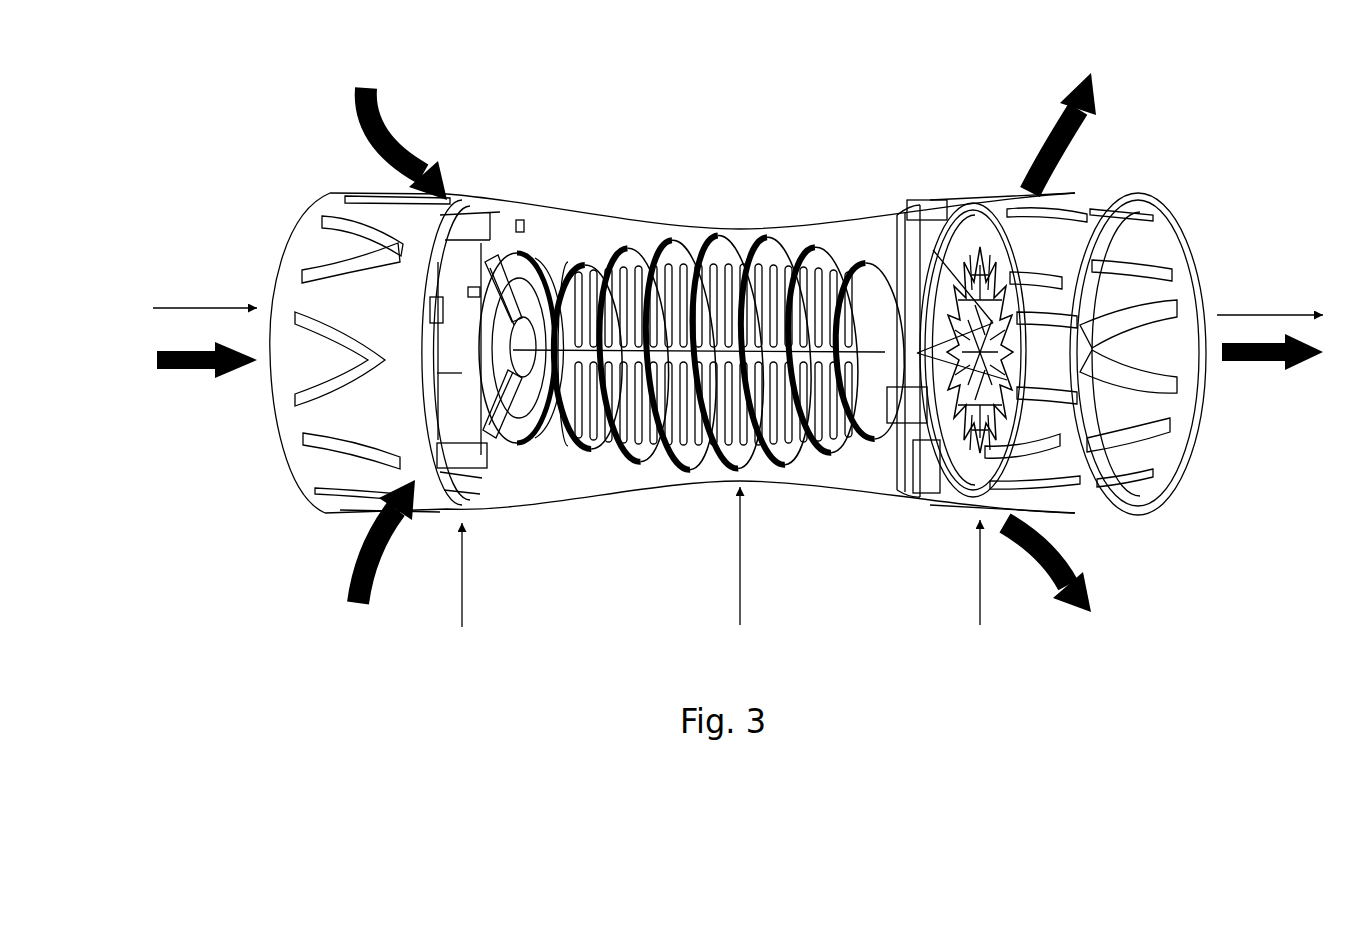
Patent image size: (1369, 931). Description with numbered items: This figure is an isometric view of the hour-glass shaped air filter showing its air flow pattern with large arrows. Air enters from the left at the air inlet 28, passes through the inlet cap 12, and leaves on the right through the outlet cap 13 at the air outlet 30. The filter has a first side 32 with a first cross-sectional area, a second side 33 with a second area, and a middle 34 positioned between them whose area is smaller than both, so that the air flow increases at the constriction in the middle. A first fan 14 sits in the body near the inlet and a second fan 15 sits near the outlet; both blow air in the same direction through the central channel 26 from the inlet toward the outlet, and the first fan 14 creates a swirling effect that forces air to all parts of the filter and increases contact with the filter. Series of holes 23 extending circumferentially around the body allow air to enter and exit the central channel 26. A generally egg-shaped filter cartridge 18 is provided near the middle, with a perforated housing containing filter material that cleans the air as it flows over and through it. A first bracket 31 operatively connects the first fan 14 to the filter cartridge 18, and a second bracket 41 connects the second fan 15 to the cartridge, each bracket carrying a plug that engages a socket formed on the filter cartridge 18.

The inlet cap 12 is at (458, 200).
The outlet cap 13 is at (966, 198).
The first fan 14 is at (505, 200).
The second fan 15 is at (926, 240).
The filter cartridge 18 is at (763, 243).
The holes 23 is at (447, 252).
The central channel 26 is at (573, 253).
The air inlet 28 is at (183, 338).
The air outlet 30 is at (1292, 337).
The first bracket 31 is at (528, 200).
The first side 32 is at (455, 594).
The second side 33 is at (983, 591).
The middle 34 is at (731, 575).
The second bracket 41 is at (930, 250).